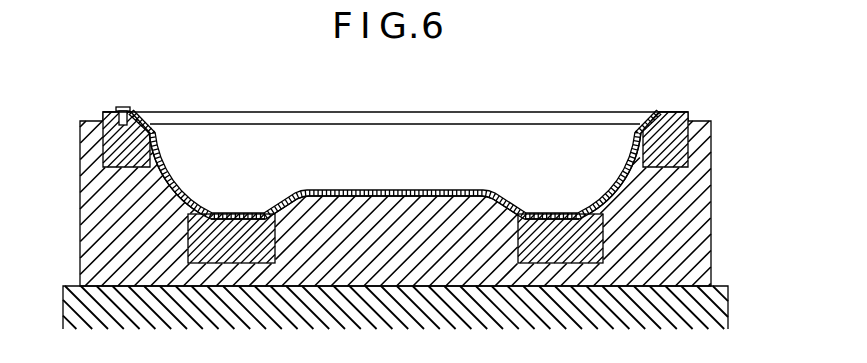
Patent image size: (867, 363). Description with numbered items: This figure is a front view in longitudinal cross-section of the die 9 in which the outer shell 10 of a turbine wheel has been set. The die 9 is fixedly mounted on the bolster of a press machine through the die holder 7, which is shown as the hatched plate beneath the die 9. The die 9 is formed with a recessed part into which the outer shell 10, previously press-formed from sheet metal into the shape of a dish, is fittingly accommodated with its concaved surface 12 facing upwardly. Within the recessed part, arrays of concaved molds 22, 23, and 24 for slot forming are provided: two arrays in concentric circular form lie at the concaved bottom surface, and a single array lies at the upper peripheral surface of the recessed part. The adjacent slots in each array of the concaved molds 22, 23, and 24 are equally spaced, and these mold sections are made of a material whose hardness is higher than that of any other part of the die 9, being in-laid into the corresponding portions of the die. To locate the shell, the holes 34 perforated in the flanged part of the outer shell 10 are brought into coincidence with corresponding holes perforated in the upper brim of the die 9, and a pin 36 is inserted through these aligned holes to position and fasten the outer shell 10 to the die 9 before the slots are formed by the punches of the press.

The die holder 7 is at (723, 306).
The die 9 is at (694, 212).
The outer shell 10 is at (386, 112).
The concaved surface 12 is at (372, 191).
The concaved mold 22 is at (249, 214).
The concaved mold 23 is at (204, 214).
The concaved mold 24 is at (152, 136).
The holes 34 is at (112, 114).
The pin 36 is at (122, 108).